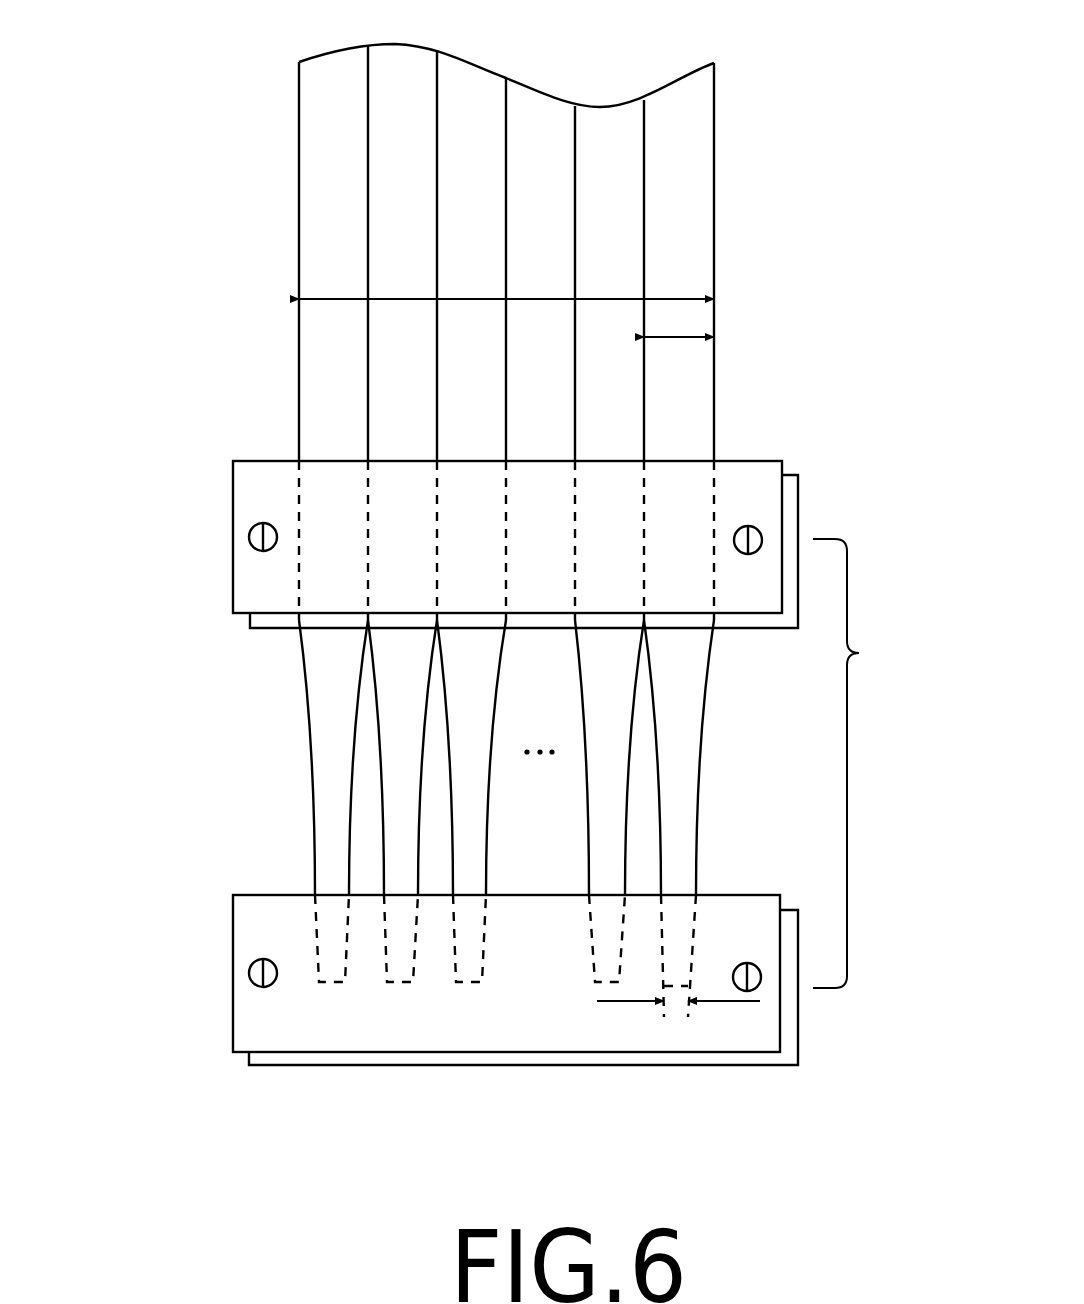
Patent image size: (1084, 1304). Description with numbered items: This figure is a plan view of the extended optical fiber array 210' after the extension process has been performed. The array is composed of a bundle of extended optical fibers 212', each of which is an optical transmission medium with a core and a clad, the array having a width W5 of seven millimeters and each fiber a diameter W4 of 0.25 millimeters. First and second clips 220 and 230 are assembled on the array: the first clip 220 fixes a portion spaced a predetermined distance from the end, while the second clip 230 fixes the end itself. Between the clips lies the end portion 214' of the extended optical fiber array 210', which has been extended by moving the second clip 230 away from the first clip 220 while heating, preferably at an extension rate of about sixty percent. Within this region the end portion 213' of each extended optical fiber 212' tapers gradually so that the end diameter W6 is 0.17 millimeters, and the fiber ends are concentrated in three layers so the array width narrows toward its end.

The extended optical fiber array 210' is at (498, 532).
The extended optical fibers 212' is at (584, 332).
The end portion of each extended optical fiber 213' is at (566, 838).
The end portion of the extended optical fiber array 214' is at (881, 763).
The first clip 220 is at (233, 535).
The second clip 230 is at (233, 971).